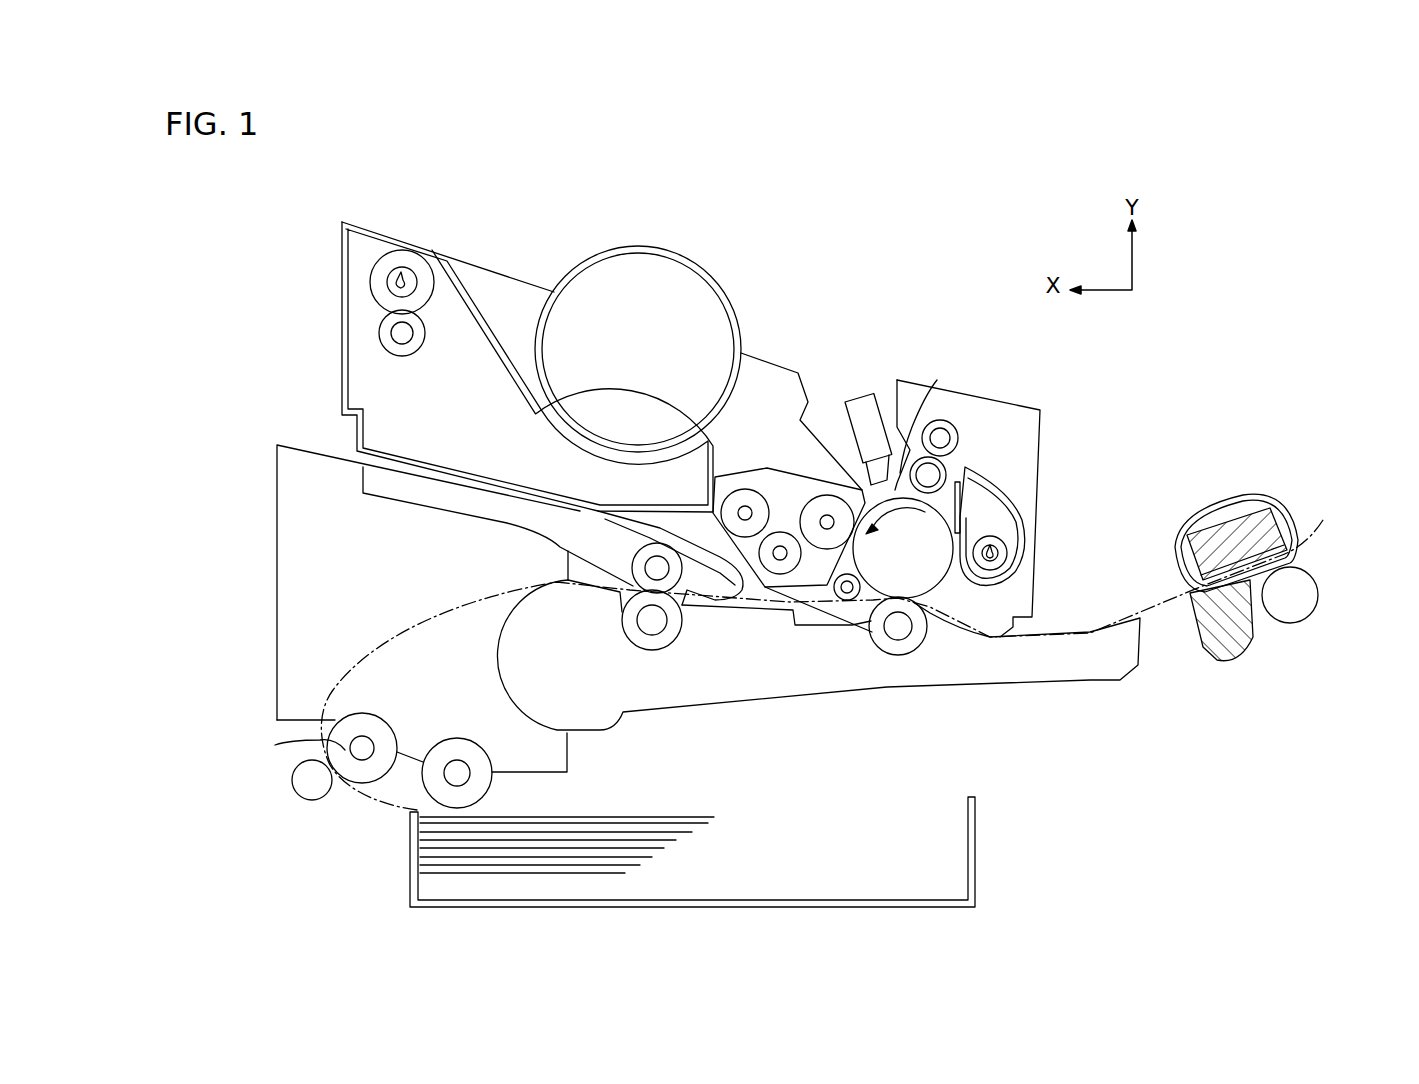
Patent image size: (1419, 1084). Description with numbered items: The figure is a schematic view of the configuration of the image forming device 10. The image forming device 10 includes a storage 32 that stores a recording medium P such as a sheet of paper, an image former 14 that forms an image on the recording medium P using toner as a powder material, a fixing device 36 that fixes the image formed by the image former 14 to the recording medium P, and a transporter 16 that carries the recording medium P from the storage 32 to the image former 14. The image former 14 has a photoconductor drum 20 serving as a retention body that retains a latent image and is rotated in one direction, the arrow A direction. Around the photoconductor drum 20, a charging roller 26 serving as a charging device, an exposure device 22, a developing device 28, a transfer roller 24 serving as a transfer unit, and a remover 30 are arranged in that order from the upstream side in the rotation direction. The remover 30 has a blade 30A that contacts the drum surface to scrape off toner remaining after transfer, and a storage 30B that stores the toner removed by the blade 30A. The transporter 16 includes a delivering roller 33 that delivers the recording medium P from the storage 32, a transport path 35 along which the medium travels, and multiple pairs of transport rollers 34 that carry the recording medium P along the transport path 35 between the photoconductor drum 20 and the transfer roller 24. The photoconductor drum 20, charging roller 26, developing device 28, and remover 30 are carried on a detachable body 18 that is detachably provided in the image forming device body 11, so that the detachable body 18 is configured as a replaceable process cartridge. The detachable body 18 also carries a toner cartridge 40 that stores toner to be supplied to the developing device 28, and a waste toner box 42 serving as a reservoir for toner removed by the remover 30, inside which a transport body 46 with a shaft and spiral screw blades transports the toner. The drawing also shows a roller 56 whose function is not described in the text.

The image forming device 10 is at (903, 341).
The image forming device body 11 is at (276, 529).
The image former 14 is at (792, 617).
The transporter 16 is at (352, 815).
The detachable body 18 is at (989, 398).
The photoconductor drum 20 is at (948, 590).
The exposure device 22 is at (866, 397).
The transfer roller 24 is at (900, 656).
The charging roller 26 is at (927, 437).
The developing device 28 is at (810, 479).
The remover 30 is at (998, 485).
The blade 30A is at (963, 514).
The storage 30B is at (1025, 551).
The storage 32 is at (976, 850).
The delivering roller 33 is at (458, 746).
The transport rollers 34 is at (630, 616).
The transport path 35 is at (375, 630).
The fixing device 36 is at (1176, 569).
The toner cartridge 40 is at (678, 256).
The waste toner box 42 is at (341, 397).
The transport body 46 is at (379, 331).
The roller 56 is at (402, 280).
The arrow A direction A is at (897, 510).
The recording medium P is at (672, 808).